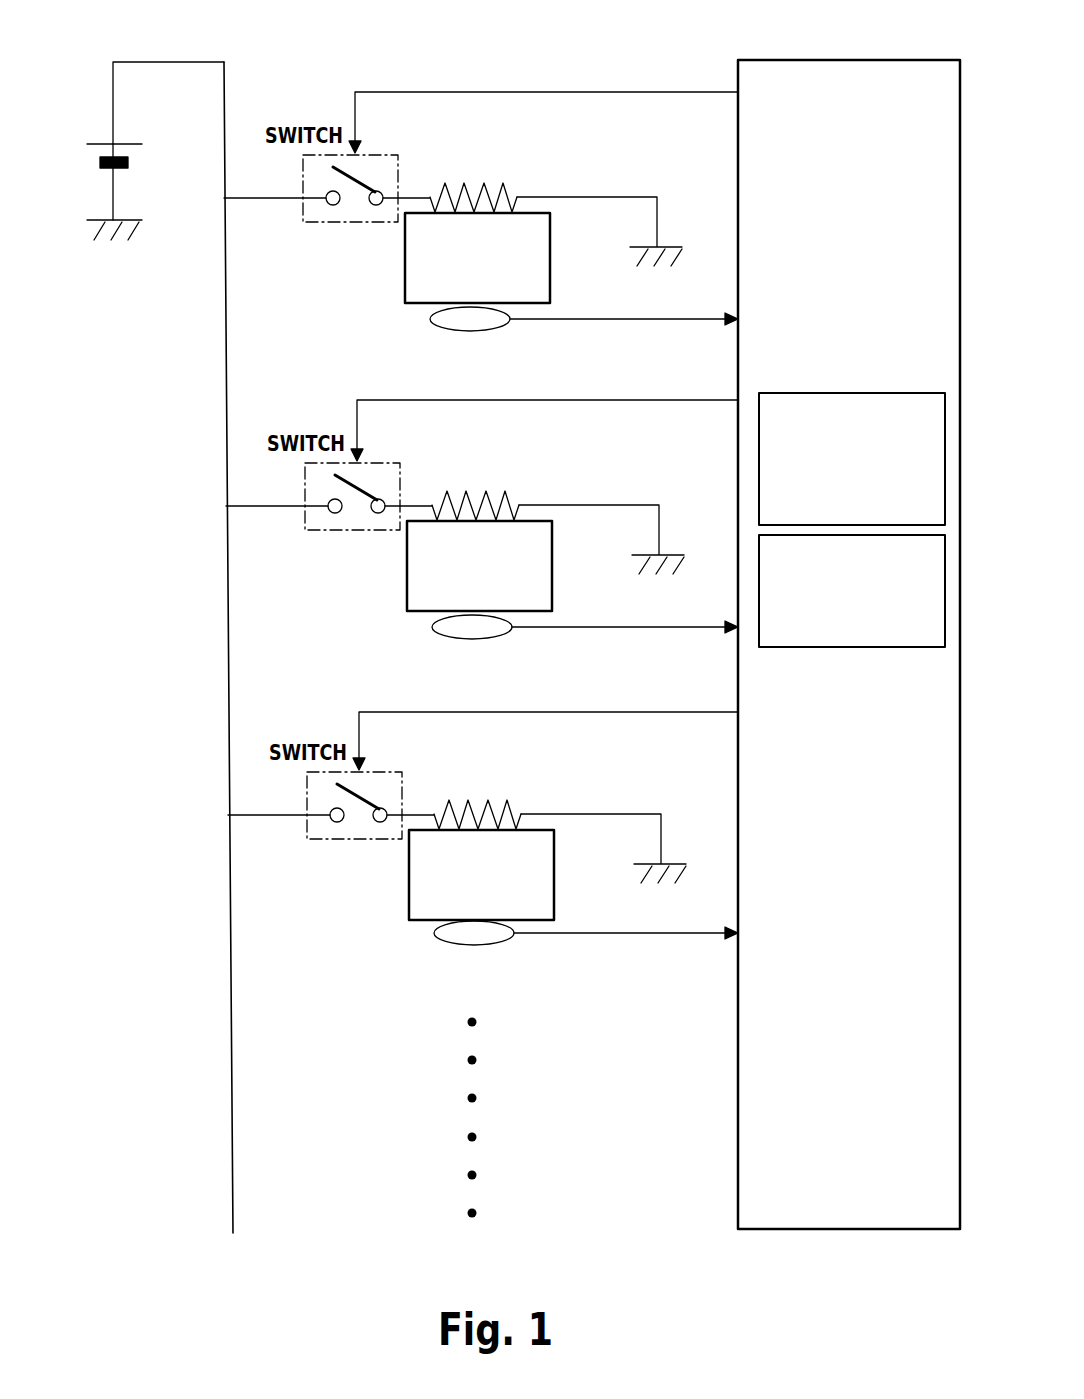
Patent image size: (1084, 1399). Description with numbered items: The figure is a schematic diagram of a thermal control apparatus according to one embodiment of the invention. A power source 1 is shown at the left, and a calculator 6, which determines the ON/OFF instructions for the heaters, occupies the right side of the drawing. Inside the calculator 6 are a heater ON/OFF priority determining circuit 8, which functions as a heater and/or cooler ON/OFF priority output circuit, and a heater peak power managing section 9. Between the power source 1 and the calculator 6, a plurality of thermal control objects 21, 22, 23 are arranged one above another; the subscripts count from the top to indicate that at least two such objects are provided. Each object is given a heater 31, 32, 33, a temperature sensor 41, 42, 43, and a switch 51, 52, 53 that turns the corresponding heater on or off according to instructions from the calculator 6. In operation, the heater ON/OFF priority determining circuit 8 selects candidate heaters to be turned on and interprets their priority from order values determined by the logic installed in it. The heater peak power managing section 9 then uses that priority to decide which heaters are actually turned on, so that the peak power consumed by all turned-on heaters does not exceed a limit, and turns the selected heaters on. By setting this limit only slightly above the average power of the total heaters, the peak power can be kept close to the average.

The power source 1 is at (127, 163).
The thermal control object 21 is at (550, 268).
The thermal control object 22 is at (513, 574).
The thermal control object 23 is at (515, 883).
The heater 31 is at (488, 186).
The heater 32 is at (554, 504).
The heater 33 is at (556, 813).
The temperature sensor 41 is at (500, 330).
The temperature sensor 42 is at (546, 657).
The temperature sensor 43 is at (547, 965).
The switch 51 is at (303, 210).
The switch 52 is at (329, 532).
The switch 53 is at (331, 841).
The calculator 6 is at (868, 60).
The heater ON/OFF priority determining circuit 8 is at (870, 393).
The heater peak power managing section 9 is at (860, 647).